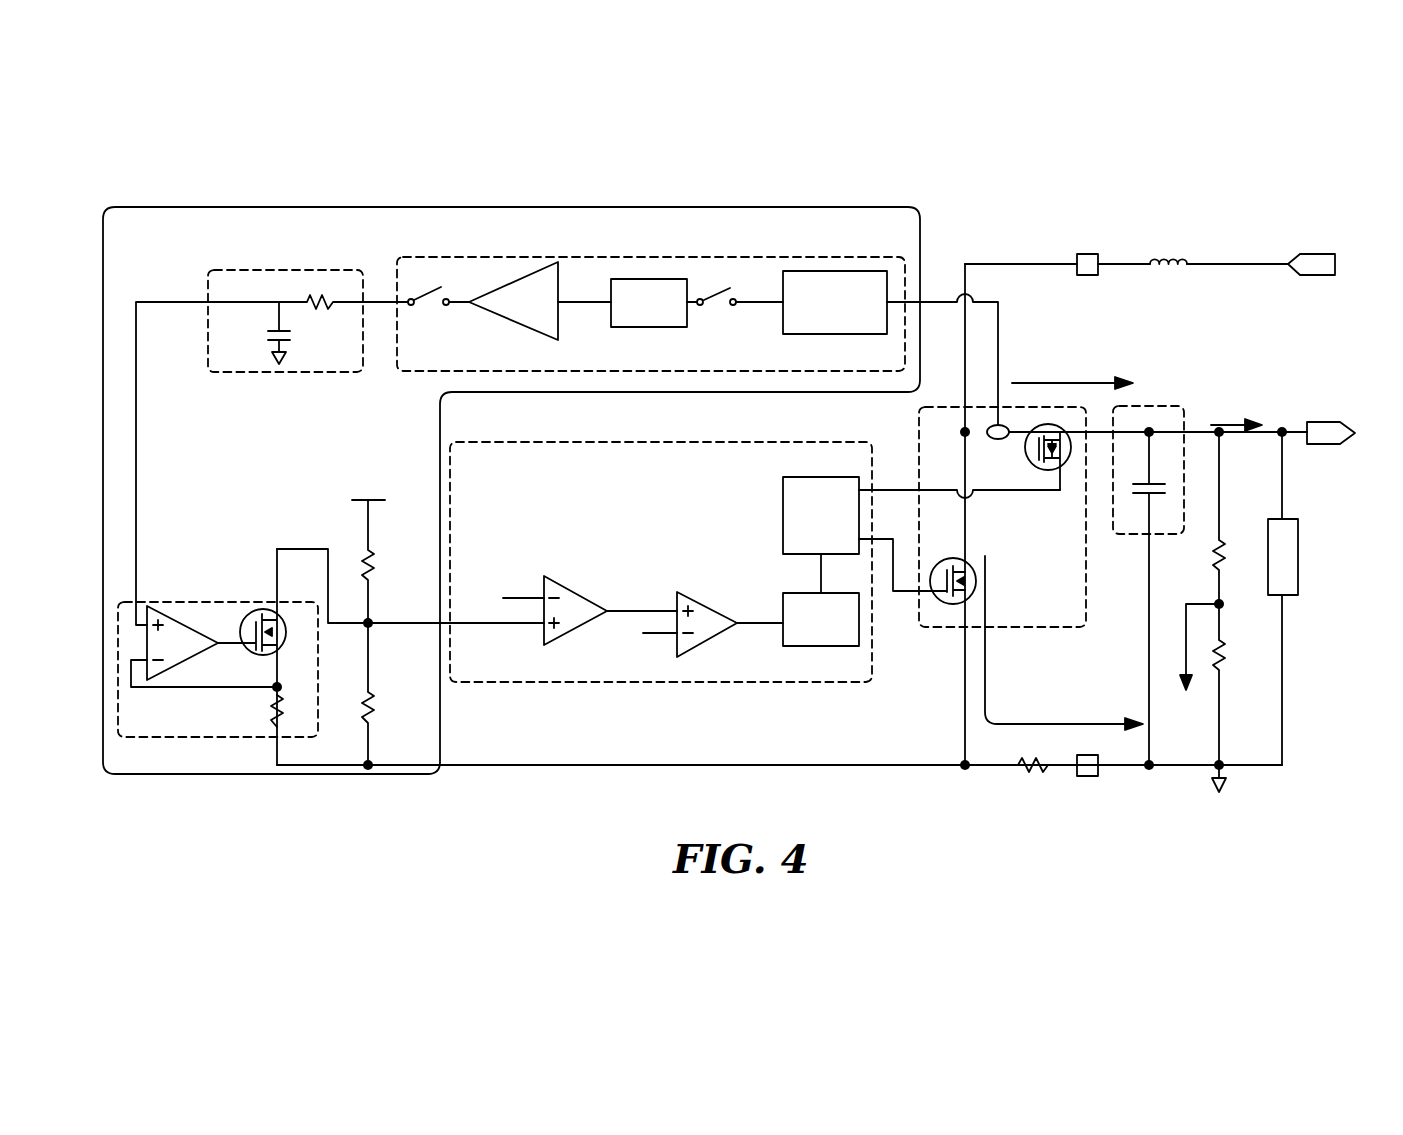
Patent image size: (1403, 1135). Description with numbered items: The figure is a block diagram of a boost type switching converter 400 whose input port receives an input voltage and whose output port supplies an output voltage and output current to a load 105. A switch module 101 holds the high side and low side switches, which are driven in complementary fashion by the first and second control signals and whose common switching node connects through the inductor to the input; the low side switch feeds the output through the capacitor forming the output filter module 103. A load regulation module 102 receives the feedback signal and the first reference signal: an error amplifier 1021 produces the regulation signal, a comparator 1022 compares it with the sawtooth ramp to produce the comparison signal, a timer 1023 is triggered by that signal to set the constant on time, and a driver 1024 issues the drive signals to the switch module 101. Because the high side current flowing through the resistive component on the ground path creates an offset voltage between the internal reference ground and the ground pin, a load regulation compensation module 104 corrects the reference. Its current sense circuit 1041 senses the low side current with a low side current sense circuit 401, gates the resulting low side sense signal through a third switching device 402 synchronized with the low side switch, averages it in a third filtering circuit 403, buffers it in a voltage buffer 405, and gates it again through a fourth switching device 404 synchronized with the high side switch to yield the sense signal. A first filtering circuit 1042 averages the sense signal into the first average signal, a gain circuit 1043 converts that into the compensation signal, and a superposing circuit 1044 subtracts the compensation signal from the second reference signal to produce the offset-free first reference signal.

The switching converter 400 is at (131, 143).
The load regulation compensation module 104 is at (683, 207).
The current sense circuit 1041 is at (825, 256).
The first filtering circuit 1042 is at (334, 252).
The gain circuit 1043 is at (218, 657).
The superposing circuit 1044 is at (377, 548).
The low side current sense circuit 401 is at (835, 302).
The third switching device 402 is at (720, 305).
The third filtering circuit 403 is at (640, 327).
The fourth switching device 404 is at (428, 305).
The voltage buffer 405 is at (558, 325).
The load regulation module 102 is at (681, 562).
The error amplifier 1021 is at (565, 645).
The comparator 1022 is at (703, 602).
The timer 1023 is at (821, 619).
The driver circuit 1024 is at (821, 515).
The switch module 101 is at (1083, 514).
The output filter module 103 is at (1118, 534).
The load 105 is at (1298, 530).